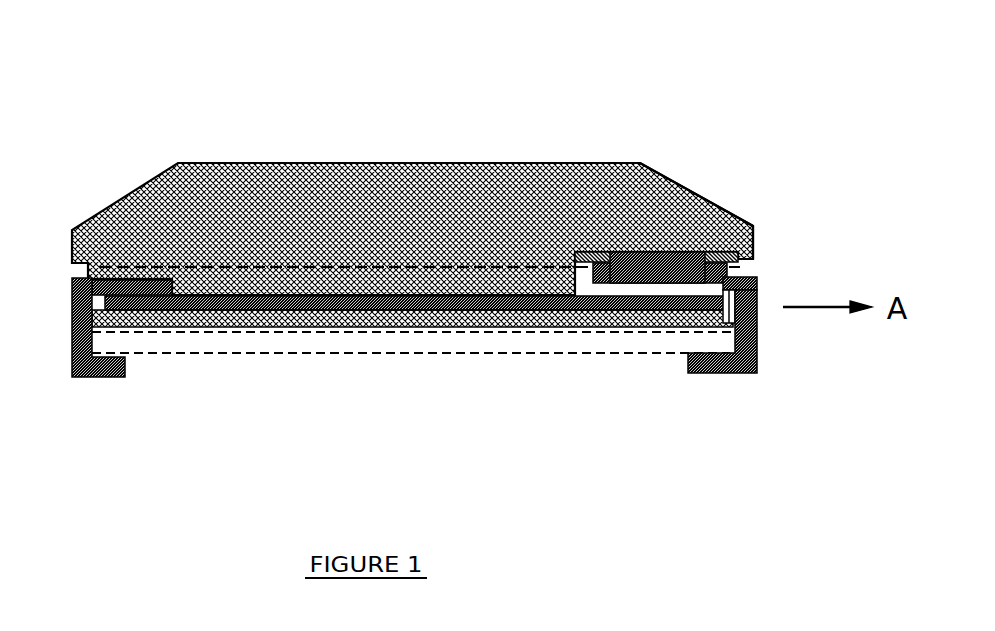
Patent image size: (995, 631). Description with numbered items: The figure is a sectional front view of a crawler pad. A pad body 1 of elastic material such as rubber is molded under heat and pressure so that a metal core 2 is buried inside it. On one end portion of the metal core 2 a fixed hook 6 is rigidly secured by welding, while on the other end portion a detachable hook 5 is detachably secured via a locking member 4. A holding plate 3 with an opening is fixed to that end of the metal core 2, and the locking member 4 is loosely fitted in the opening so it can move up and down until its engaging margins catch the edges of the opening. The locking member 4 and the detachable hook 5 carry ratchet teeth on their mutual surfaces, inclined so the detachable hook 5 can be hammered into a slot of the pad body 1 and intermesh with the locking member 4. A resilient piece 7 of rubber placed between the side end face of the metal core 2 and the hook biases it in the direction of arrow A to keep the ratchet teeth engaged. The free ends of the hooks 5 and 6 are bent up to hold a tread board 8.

The pad body 1 is at (333, 162).
The metal core 2 is at (307, 310).
The holding plate 3 is at (752, 226).
The locking member 4 is at (662, 252).
The detachable hook 5 is at (718, 373).
The fixed hook 6 is at (92, 377).
The resilient piece 7 is at (755, 292).
The tread board 8 is at (478, 343).